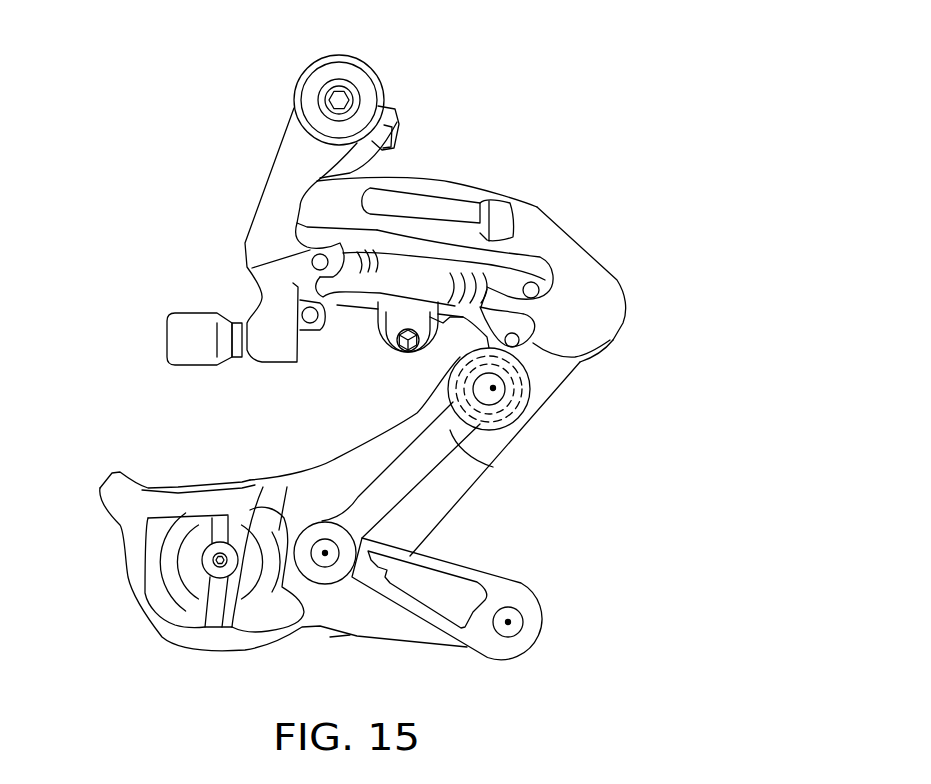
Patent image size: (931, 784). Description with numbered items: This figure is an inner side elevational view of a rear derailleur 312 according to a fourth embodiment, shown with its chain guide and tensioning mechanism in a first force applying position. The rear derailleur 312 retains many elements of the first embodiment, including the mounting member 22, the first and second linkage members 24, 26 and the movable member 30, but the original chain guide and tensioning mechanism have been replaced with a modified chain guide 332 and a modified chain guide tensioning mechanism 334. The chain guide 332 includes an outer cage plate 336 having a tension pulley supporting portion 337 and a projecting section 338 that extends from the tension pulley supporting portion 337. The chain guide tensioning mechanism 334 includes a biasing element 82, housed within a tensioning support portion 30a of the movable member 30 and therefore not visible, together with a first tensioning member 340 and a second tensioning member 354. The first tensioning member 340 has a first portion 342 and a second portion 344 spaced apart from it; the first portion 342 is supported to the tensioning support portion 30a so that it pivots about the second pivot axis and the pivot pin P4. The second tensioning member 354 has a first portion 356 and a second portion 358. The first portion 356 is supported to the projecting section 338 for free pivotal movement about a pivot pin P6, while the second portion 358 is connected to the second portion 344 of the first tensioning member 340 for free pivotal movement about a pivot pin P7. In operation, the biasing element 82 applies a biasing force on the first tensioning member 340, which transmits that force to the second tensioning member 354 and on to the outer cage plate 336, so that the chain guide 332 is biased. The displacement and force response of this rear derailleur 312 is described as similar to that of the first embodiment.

The rear derailleur 312 is at (531, 121).
The mounting member 22 is at (293, 160).
The first linkage member 24 is at (447, 203).
The second linkage member 26 is at (355, 307).
The movable member 30 is at (575, 300).
The tensioning support portion 30a is at (593, 372).
The biasing element 82 is at (523, 441).
The pivot pin P4 is at (493, 388).
The chain guide 332 is at (220, 430).
The chain guide tensioning mechanism 334 is at (494, 497).
The outer cage plate 336 is at (360, 477).
The tension pulley supporting portion 337 is at (147, 607).
The projecting section 338 is at (442, 643).
The first tensioning member 340 is at (417, 460).
The first portion 342 is at (490, 464).
The second portion 344 is at (320, 537).
The second tensioning member 354 is at (445, 567).
The first portion 356 is at (523, 600).
The second portion 358 is at (343, 582).
The pivot pin P6 is at (508, 622).
The pivot pin P7 is at (325, 553).